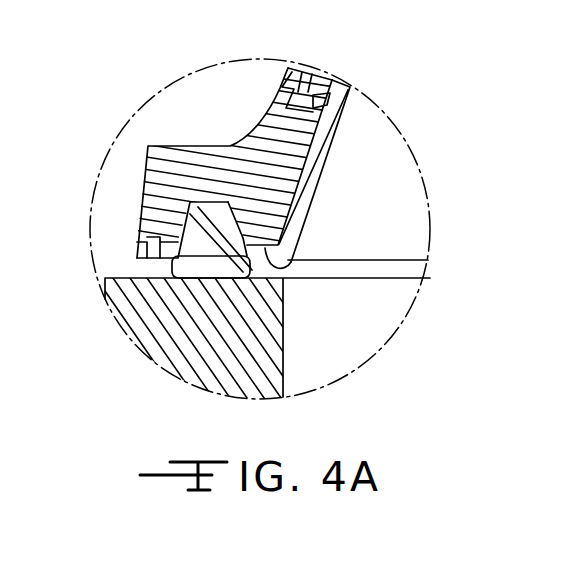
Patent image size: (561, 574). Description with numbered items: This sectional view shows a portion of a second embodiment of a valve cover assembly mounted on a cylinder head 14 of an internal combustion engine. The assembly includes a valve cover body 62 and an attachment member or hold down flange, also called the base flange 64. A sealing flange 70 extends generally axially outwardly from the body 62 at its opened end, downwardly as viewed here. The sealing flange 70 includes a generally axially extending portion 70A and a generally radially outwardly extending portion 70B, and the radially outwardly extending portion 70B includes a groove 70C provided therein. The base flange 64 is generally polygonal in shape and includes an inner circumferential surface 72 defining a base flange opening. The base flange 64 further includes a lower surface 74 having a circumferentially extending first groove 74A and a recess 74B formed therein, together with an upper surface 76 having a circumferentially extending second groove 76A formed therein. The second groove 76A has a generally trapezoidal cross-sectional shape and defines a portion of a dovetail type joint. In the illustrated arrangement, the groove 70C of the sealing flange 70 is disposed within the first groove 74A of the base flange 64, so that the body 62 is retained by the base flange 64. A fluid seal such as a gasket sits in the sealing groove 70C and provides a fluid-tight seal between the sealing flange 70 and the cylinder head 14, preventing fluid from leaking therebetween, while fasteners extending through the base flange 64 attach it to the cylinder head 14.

The base plate 14 is at (165, 320).
The retaining tab 62 is at (307, 107).
The clamp block 64 is at (175, 147).
The membrane 70 is at (337, 141).
The membrane arm portion 70A is at (314, 176).
The membrane base portion 70B is at (283, 320).
The membrane lip portion 70C is at (208, 218).
The backing layer 72 is at (336, 156).
The sealing lip 74 is at (284, 266).
The lip top surface 74A is at (190, 203).
The lip step 74B is at (137, 240).
The clamp head 76 is at (333, 80).
The clamp head groove 76A is at (303, 110).